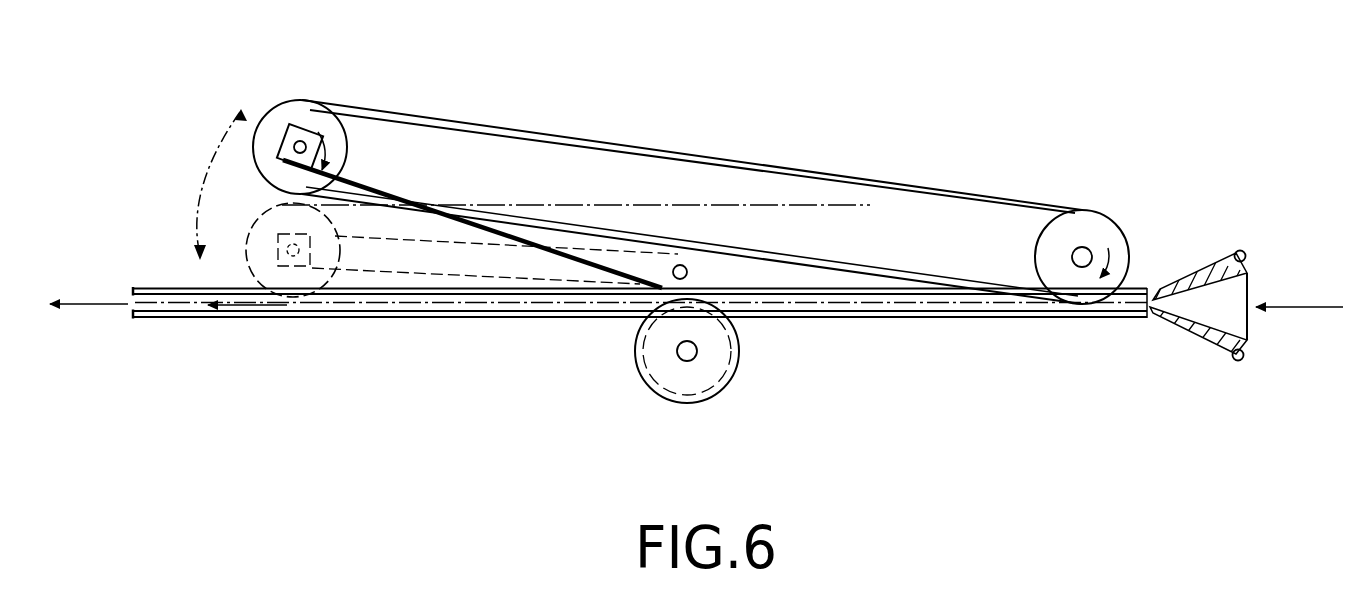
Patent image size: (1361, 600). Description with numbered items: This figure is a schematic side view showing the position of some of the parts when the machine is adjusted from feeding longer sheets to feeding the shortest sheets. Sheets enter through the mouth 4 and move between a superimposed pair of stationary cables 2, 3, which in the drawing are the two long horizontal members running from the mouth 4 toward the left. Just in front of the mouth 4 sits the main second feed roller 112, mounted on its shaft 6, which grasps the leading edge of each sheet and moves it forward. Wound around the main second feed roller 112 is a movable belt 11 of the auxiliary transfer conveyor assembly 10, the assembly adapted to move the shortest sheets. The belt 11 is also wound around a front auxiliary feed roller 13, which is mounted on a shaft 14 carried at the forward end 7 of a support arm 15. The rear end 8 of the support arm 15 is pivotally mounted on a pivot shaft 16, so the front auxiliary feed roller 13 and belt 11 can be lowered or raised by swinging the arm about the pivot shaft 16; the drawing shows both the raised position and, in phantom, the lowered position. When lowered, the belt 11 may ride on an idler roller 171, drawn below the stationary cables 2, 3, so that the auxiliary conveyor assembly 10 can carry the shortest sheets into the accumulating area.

The stationary cable 2 is at (163, 288).
The stationary cable 3 is at (163, 318).
The mouth 4 is at (1254, 298).
The shaft 6 is at (1086, 250).
The forward end 7 is at (283, 140).
The rear end 8 is at (700, 258).
The auxiliary transfer conveyor assembly 10 is at (703, 118).
The movable belt 11 is at (517, 127).
The front auxiliary feed roller 13 is at (307, 103).
The shaft 14 is at (307, 143).
The support arm 15 is at (458, 198).
The pivot shaft 16 is at (690, 277).
The main second feed roller 112 is at (1103, 220).
The idler roller 171 is at (698, 370).